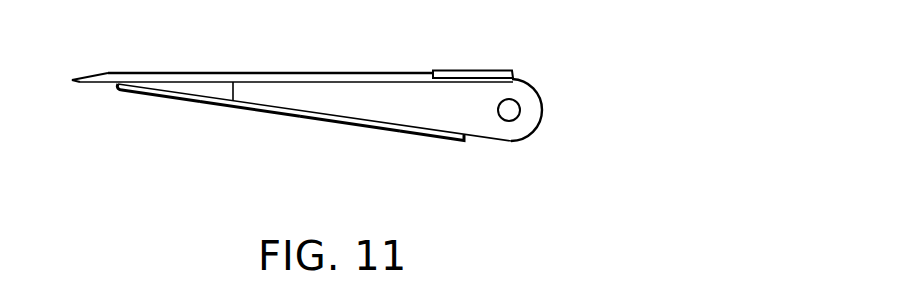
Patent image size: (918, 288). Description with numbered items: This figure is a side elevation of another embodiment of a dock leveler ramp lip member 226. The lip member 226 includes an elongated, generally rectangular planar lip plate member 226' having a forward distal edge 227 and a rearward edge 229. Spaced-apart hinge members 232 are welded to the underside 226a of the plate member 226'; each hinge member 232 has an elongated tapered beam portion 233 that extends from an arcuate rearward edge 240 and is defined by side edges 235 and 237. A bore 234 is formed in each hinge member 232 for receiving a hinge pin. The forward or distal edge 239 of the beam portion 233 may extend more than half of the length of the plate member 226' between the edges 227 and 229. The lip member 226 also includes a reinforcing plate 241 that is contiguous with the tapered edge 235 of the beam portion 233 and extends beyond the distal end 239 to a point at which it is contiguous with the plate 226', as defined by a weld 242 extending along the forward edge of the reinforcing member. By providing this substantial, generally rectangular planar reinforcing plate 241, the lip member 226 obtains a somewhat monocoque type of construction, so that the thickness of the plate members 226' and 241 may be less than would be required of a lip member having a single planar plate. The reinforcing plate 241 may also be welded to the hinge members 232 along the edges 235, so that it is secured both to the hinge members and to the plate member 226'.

The lip member 226 is at (366, 49).
The lip plate member 226' is at (204, 49).
The underside 226a is at (346, 83).
The forward distal edge 227 is at (76, 83).
The rearward edge 229 is at (513, 78).
The hinge member 232 is at (492, 132).
The beam portion 233 is at (331, 115).
The bore 234 is at (508, 104).
The side edge 235 is at (272, 108).
The side edge 237 is at (433, 70).
The distal edge 239 is at (222, 103).
The arcuate rearward edge 240 is at (543, 112).
The reinforcing plate 241 is at (400, 134).
The weld 242 is at (116, 88).